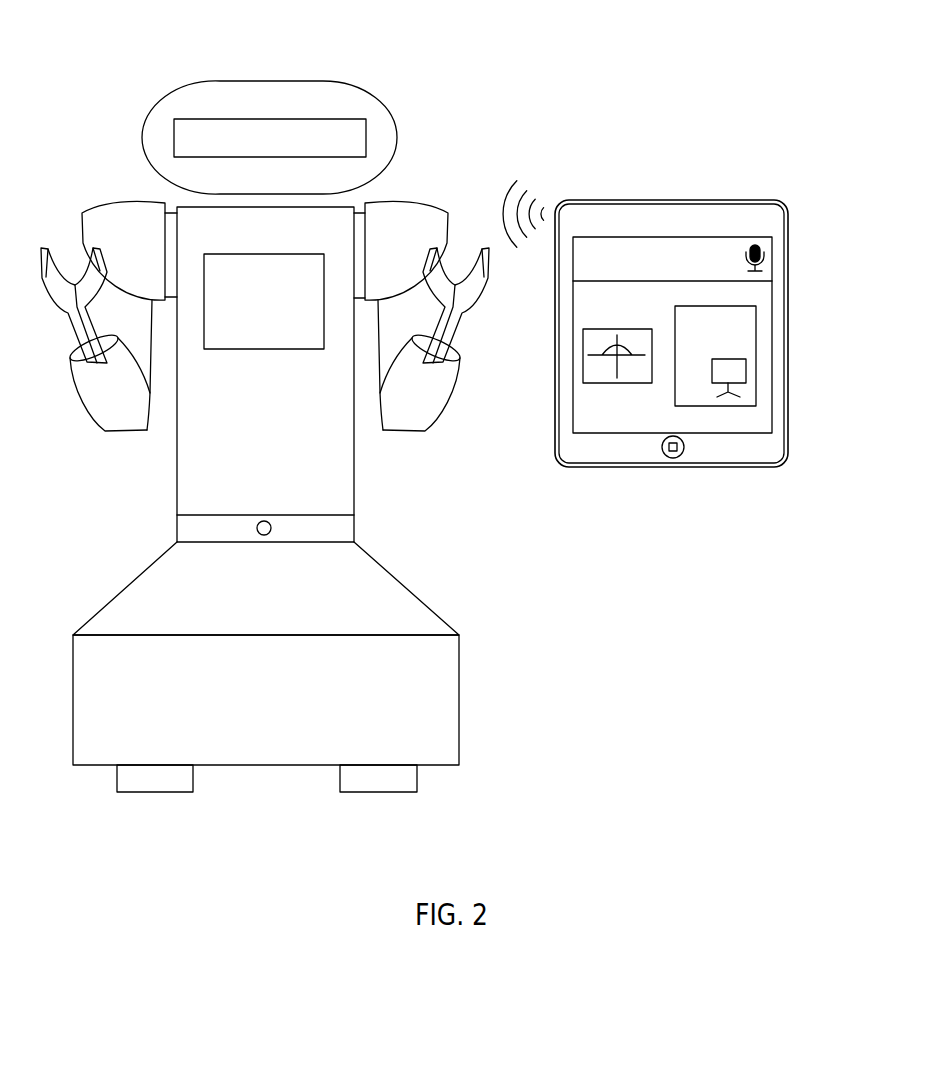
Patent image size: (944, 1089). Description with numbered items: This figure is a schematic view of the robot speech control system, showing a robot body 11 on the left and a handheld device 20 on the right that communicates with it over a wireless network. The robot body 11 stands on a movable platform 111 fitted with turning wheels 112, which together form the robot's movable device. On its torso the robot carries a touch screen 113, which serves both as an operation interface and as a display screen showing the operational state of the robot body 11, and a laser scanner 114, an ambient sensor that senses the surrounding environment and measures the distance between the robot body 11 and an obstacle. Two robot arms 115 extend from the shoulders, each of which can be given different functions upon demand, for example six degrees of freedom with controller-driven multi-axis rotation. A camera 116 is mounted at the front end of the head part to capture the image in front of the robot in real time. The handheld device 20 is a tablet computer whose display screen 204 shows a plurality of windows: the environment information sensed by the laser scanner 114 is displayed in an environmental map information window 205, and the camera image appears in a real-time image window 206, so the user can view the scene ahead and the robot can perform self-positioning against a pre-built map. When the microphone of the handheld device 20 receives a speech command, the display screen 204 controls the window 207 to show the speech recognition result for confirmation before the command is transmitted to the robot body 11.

The robot body 11 is at (207, 67).
The handheld device 20 is at (626, 163).
The movable platform 111 is at (160, 582).
The turning wheels 112 is at (156, 780).
The touch screen 113 is at (248, 352).
The laser scanner 114 is at (269, 523).
The robot arms 115 is at (118, 216).
The camera 116 is at (367, 137).
The display screen 204 is at (773, 326).
The environmental map information window 205 is at (582, 346).
The real-time image window 206 is at (757, 377).
The window 207 is at (772, 258).